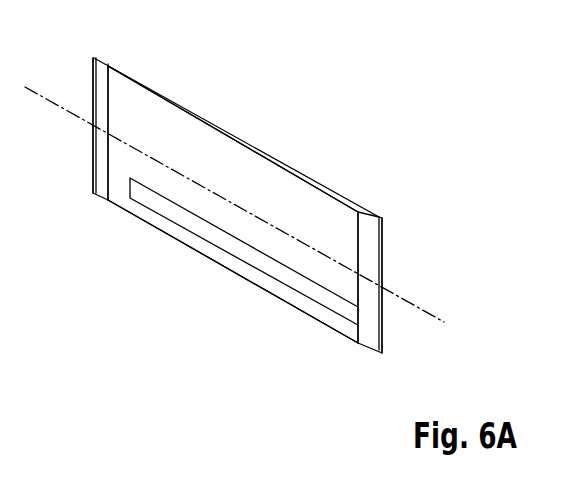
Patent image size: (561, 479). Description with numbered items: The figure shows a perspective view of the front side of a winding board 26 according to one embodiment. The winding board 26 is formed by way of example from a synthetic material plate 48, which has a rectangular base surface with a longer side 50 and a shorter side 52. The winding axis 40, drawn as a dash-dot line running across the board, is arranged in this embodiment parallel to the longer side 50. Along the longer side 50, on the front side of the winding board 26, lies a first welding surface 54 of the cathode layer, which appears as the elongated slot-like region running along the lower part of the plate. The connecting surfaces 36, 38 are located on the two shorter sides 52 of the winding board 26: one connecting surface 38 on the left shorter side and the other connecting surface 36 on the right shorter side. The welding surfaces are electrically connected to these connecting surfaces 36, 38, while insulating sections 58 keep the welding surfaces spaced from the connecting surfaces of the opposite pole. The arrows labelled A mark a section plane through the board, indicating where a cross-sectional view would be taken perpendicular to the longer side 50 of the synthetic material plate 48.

The winding board 26 is at (300, 130).
The connecting surface 36 is at (367, 221).
The connecting surface 38 is at (76, 103).
The winding axis 40 is at (400, 298).
The synthetic material plate 48 is at (189, 124).
The longer side 50 is at (263, 151).
The shorter side 52 is at (93, 78).
The first welding surface 54 is at (310, 294).
The insulating section 58 is at (98, 163).
The section plane A is at (236, 122).